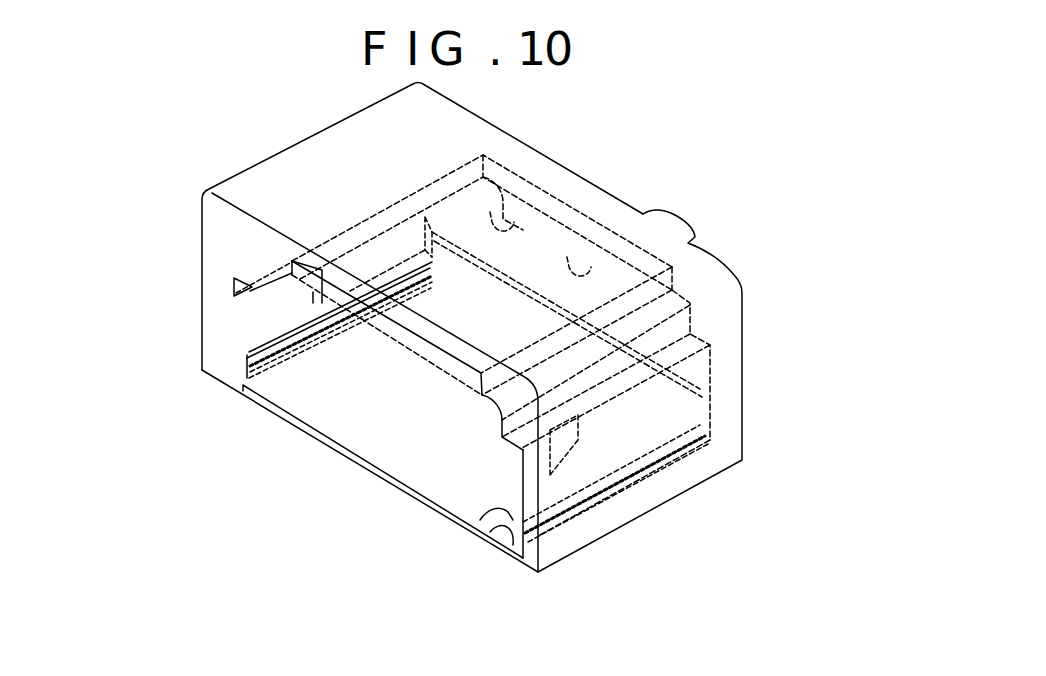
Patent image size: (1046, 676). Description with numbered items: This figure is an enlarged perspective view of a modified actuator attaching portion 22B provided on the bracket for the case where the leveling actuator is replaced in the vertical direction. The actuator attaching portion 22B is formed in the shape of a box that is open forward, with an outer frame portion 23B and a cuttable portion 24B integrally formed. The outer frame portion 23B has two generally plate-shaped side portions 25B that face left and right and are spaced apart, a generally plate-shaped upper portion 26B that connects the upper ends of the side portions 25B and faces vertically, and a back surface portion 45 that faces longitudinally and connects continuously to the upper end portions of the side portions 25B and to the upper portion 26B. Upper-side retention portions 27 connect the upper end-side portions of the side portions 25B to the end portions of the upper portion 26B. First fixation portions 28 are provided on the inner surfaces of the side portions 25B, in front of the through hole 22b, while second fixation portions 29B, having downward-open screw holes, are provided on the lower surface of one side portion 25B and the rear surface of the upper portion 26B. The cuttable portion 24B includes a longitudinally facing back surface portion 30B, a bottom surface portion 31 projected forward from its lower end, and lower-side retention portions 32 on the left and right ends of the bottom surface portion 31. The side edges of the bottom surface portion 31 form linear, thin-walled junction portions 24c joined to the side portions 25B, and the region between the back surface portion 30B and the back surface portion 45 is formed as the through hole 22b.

The actuator attaching portion 22B is at (812, 86).
The through hole 22b is at (508, 273).
The outer frame portion 23B is at (556, 94).
The cuttable portion 24B is at (346, 453).
The junction portion 24c is at (237, 367).
The side portion 25B is at (233, 293).
The upper portion 26B is at (593, 197).
The upper-side retention portion 27 is at (308, 293).
The first fixation portion 28 is at (323, 305).
The second fixation portion 29B is at (695, 243).
The back surface portion 30B is at (513, 222).
The bottom surface portion 31 is at (412, 473).
The lower-side retention portion 32 is at (283, 377).
The back surface portion 45 is at (591, 267).